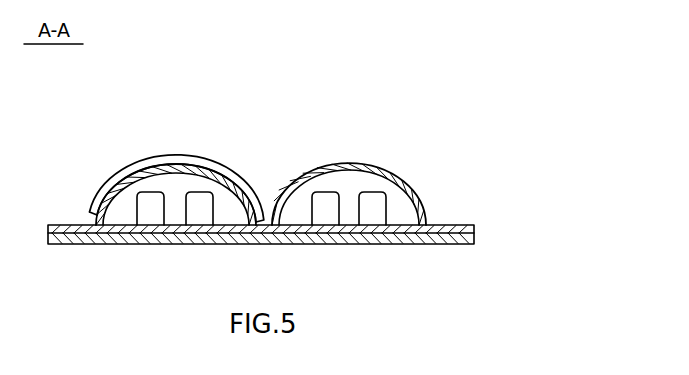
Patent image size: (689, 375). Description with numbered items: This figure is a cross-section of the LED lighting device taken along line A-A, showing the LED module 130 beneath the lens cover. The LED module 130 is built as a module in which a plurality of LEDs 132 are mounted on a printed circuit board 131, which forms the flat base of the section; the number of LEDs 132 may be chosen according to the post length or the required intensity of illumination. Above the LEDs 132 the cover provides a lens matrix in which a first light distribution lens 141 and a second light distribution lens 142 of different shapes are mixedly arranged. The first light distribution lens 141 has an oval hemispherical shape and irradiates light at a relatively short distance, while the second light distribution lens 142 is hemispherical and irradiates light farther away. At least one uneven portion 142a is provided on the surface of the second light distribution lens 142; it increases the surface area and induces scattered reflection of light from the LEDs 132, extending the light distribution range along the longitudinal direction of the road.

The LED module 130 is at (322, 238).
The printed circuit board 131 is at (455, 243).
The LED 132 is at (377, 212).
The first light distribution lens 141 is at (345, 172).
The second light distribution lens 142 is at (158, 166).
The uneven portion 142a is at (203, 168).